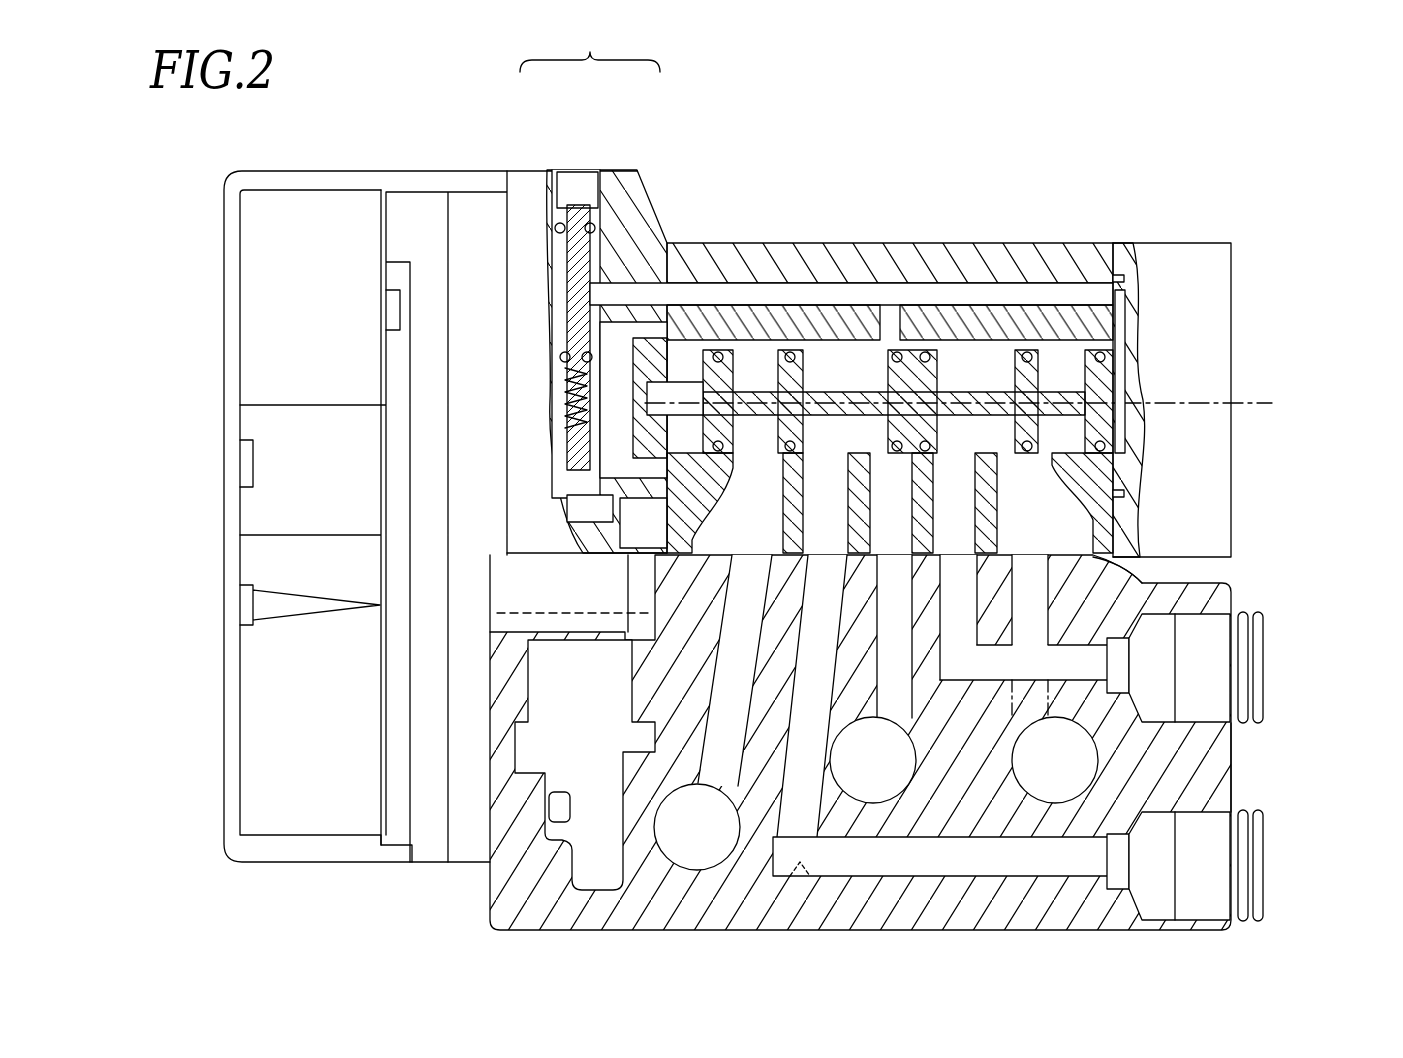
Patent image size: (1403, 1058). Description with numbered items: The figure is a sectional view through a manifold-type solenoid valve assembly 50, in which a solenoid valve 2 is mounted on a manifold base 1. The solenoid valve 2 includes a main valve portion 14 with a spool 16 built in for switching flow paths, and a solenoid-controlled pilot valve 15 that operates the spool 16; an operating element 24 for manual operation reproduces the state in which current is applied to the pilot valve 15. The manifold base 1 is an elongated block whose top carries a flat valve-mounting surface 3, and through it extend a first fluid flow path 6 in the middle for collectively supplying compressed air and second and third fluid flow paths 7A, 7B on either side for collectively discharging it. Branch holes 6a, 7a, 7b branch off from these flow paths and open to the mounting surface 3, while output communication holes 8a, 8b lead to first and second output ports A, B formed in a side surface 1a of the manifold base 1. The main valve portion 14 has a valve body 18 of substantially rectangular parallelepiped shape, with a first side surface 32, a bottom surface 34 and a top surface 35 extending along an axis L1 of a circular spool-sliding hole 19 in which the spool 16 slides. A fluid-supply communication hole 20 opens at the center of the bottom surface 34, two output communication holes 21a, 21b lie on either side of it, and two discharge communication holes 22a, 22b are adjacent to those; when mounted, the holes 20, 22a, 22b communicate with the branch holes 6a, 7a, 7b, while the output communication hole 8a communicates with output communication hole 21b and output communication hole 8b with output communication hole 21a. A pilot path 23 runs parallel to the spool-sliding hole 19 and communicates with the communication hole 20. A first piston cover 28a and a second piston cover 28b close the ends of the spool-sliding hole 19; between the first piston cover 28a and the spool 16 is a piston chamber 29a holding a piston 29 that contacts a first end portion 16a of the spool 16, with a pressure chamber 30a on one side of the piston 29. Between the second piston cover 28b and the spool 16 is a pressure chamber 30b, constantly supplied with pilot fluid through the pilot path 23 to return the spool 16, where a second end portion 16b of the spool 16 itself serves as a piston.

The manifold base 1 is at (1246, 746).
The side surface 1a is at (1238, 776).
The solenoid valve 2 is at (590, 41).
The valve-mounting surface 3 is at (1118, 553).
The first fluid flow path 6 is at (882, 774).
The branch hole 6a is at (905, 617).
The second fluid flow path 7A is at (710, 842).
The third fluid flow path 7B is at (1070, 775).
The branch hole 7a is at (760, 615).
The branch hole 7b is at (1042, 617).
The output communication hole 8a is at (1085, 680).
The output communication hole 8b is at (1052, 875).
The main valve portion 14 is at (690, 224).
The pilot valve 15 is at (466, 158).
The spool 16 is at (983, 305).
The first end portion 16a is at (778, 352).
The second end portion 16b is at (1097, 377).
The valve body 18 is at (944, 267).
The spool-sliding hole 19 is at (840, 382).
The fluid-supply communication hole 20 is at (902, 542).
The output communication hole 21a is at (840, 542).
The output communication hole 21b is at (972, 542).
The discharge communication hole 22a is at (759, 542).
The discharge communication hole 22b is at (1054, 542).
The pilot path 23 is at (868, 300).
The operating element 24 is at (623, 203).
The first piston cover 28a is at (553, 215).
The second piston cover 28b is at (1118, 265).
The piston 29 is at (683, 353).
The piston chamber 29a is at (737, 347).
The pressure chamber 30a is at (617, 413).
The pressure chamber 30b is at (1118, 412).
The first side surface 32 is at (1205, 278).
The bottom surface 34 is at (1108, 558).
The top surface 35 is at (1047, 272).
The manifold-type solenoid valve assembly 50 is at (1280, 213).
The first output port A is at (1208, 677).
The second output port B is at (1208, 877).
The axis L1 is at (979, 404).